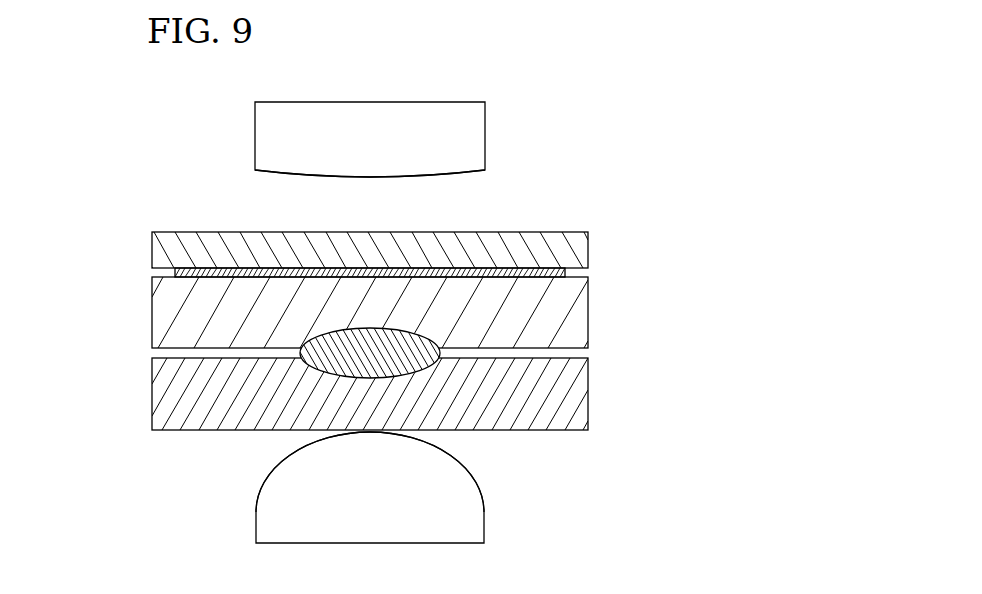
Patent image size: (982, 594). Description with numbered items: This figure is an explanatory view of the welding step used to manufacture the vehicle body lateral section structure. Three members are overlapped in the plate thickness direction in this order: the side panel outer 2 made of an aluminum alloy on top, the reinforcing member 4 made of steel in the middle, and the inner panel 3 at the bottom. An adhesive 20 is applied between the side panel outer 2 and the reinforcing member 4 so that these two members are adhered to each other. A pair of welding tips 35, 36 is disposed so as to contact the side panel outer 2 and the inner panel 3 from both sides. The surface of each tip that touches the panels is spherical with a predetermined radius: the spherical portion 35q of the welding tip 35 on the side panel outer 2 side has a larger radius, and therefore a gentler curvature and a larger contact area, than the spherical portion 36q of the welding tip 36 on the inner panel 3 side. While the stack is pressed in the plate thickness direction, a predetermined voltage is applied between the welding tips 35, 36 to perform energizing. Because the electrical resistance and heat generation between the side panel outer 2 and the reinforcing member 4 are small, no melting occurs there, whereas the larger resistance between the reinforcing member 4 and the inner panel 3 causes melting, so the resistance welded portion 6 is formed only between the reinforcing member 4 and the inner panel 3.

The side panel outer 2 is at (580, 248).
The adhesive 20 is at (538, 271).
The reinforcing member 4 is at (557, 312).
The inner panel 3 is at (557, 396).
The resistance welded portion 6 is at (420, 361).
The welding tip 35 is at (255, 120).
The spherical portion 35q is at (297, 177).
The welding tip 36 is at (256, 522).
The spherical portion 36q is at (283, 460).